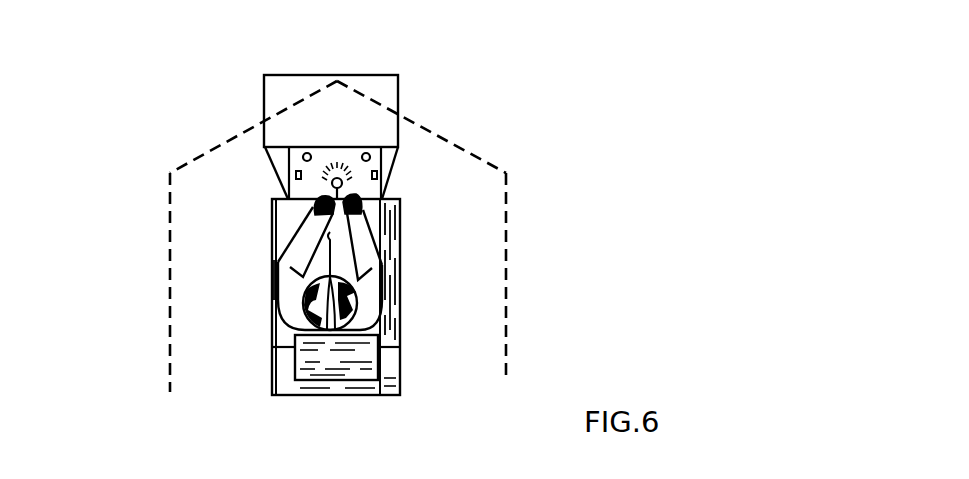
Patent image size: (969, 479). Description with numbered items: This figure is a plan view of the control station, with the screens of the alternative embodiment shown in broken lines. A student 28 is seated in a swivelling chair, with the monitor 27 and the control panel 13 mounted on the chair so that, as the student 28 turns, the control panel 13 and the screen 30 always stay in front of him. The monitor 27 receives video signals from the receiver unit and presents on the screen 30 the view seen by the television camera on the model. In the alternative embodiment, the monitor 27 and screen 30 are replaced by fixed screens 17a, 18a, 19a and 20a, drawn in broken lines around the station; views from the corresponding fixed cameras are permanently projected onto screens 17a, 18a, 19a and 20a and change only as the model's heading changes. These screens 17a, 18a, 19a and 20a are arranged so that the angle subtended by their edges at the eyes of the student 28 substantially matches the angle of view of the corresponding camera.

The control panel 13 is at (381, 188).
The fixed screen 17a is at (508, 278).
The fixed screen 18a is at (432, 130).
The fixed screen 19a is at (238, 135).
The fixed screen 20a is at (170, 280).
The monitor 27 is at (361, 122).
The student 28 is at (364, 303).
The screen 30 is at (292, 148).